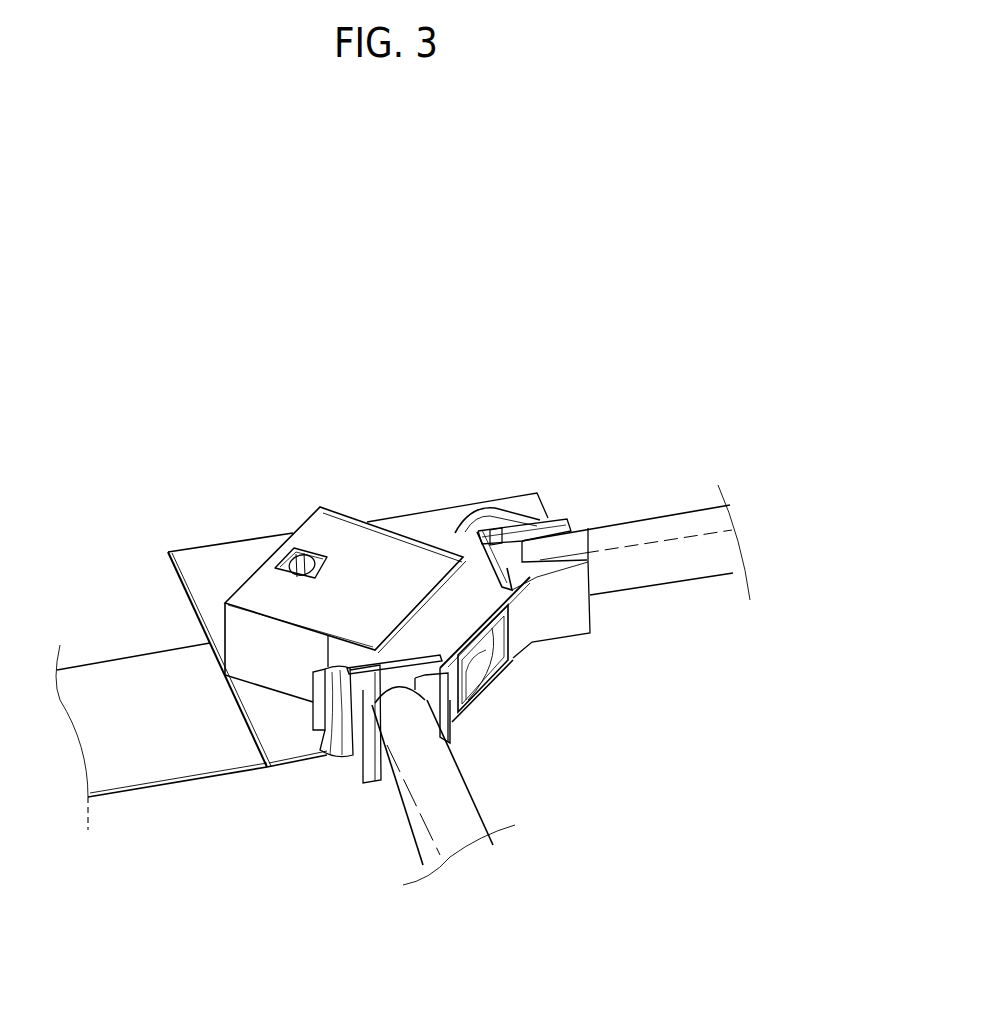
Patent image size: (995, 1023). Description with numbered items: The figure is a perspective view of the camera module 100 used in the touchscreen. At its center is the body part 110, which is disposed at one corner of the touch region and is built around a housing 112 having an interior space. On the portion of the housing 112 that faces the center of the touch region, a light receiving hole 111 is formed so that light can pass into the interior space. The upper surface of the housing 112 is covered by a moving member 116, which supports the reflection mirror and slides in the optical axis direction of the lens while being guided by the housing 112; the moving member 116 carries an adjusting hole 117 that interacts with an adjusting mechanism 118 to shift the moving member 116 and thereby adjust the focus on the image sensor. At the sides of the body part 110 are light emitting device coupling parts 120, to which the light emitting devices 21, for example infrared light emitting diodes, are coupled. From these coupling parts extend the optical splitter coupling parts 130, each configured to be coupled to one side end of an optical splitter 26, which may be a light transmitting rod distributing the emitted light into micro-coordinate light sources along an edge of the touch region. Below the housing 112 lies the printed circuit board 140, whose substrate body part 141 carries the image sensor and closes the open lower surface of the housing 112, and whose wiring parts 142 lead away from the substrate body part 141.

The camera module 100 is at (240, 432).
The body part 110 is at (240, 562).
The housing 112 is at (243, 625).
The moving member 116 is at (358, 530).
The adjusting hole 117 is at (276, 556).
The adjusting mechanism 118 is at (306, 555).
The light emitting device coupling part 120 is at (408, 662).
The light emitting device 21 is at (385, 660).
The optical splitter 26 is at (643, 522).
The light receiving hole 111 is at (475, 658).
The optical splitter coupling part 130 is at (440, 700).
The printed circuit board 140 is at (353, 808).
The substrate body part 141 is at (242, 765).
The wiring part 142 is at (335, 757).